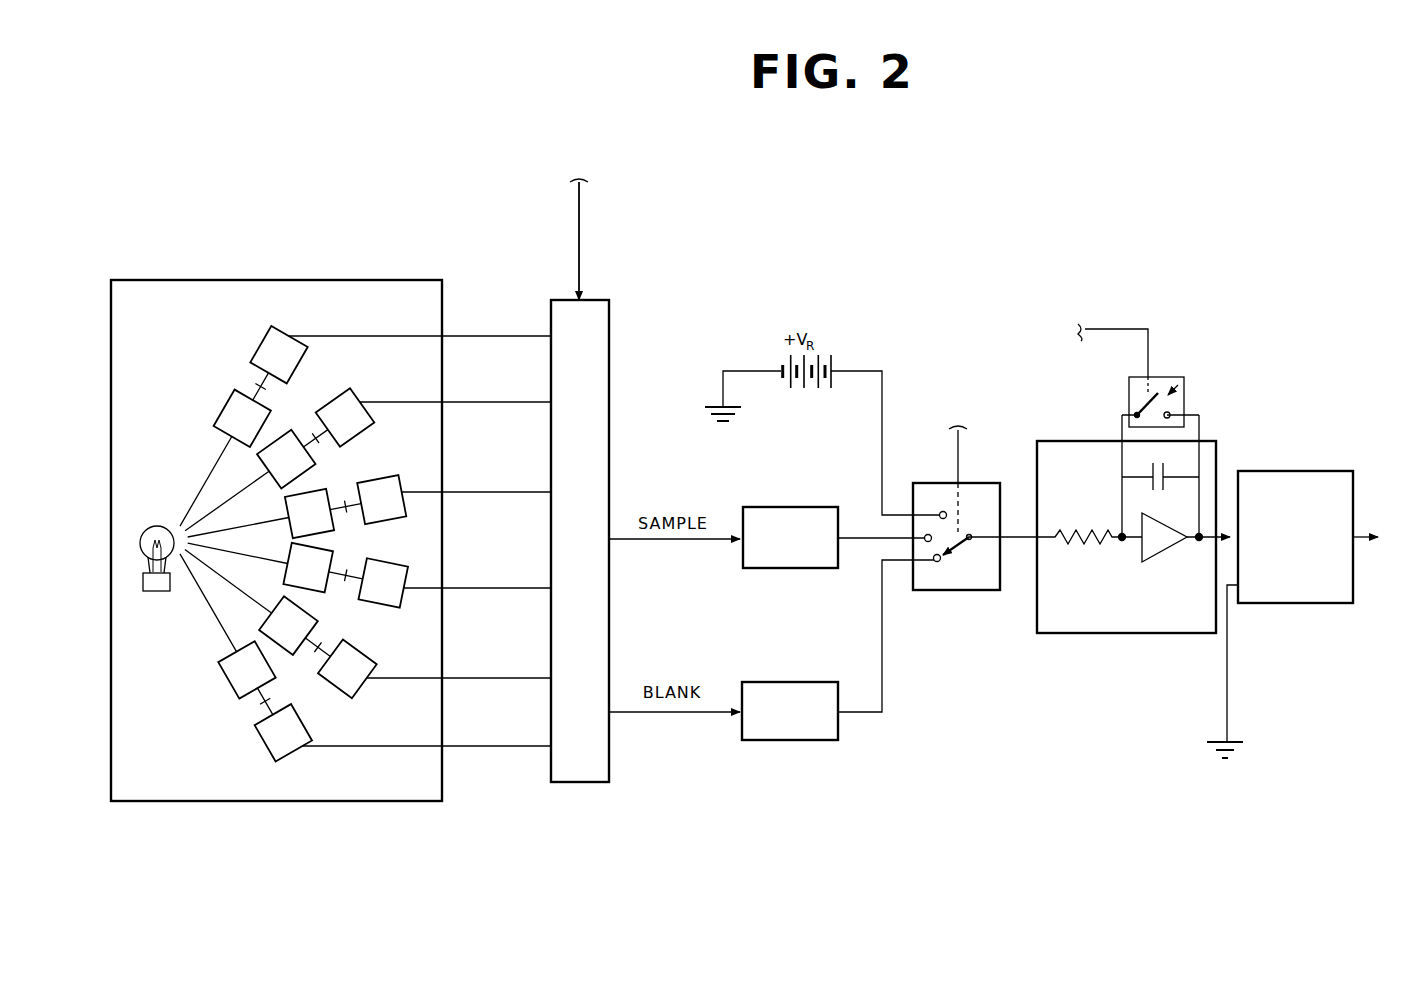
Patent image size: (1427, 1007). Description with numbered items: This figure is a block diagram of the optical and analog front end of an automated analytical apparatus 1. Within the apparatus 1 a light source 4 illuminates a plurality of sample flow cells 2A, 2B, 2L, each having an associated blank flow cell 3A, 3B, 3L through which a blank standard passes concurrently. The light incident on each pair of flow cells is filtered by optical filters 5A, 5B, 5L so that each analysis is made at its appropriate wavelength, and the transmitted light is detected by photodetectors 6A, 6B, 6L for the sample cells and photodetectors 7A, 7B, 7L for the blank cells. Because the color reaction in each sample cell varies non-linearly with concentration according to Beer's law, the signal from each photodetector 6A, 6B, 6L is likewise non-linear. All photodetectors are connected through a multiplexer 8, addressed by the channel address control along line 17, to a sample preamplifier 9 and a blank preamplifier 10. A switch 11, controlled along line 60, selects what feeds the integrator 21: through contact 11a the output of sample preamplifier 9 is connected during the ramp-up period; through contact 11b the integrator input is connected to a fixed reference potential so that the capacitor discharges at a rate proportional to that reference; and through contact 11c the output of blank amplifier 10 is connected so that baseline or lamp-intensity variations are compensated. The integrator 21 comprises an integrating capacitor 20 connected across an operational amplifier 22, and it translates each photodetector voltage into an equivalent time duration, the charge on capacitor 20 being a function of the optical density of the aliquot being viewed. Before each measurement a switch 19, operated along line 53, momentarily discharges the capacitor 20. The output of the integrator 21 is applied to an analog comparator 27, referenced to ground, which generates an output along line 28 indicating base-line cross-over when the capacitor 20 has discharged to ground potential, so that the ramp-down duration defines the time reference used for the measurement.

The apparatus 1 is at (265, 280).
The sample flow cell 2A is at (232, 400).
The blank flow cell 3A is at (258, 462).
The optical filter 5A is at (315, 433).
The photodetector 6A is at (273, 328).
The photodetector 7A is at (350, 388).
The sample flow cell 2B is at (284, 507).
The blank flow cell 3B is at (290, 556).
The optical filter 5B is at (346, 574).
The photodetector 6B is at (372, 481).
The photodetector 7B is at (393, 562).
The sample flow cell 2L is at (281, 600).
The blank flow cell 3L is at (250, 642).
The optical filter 5L is at (268, 699).
The photodetector 6L is at (364, 650).
The photodetector 7L is at (289, 755).
The light source 4 is at (153, 526).
The multiplexer 8 is at (610, 356).
The line 17 is at (580, 240).
The sample preamplifier 9 is at (772, 568).
The preamplifier 10 is at (797, 740).
The switch 11 is at (923, 533).
The switch contact 11a is at (924, 540).
The contact 11b is at (940, 511).
The contact 11c is at (933, 561).
The line 60 is at (958, 462).
The switch 19 is at (1185, 384).
The integrating capacitor 20 is at (1167, 473).
The integrator 21 is at (1133, 541).
The operational amplifier 22 is at (1162, 553).
The analog comparator 27 is at (1337, 603).
The line 28 is at (1358, 540).
The line 53 is at (1115, 328).